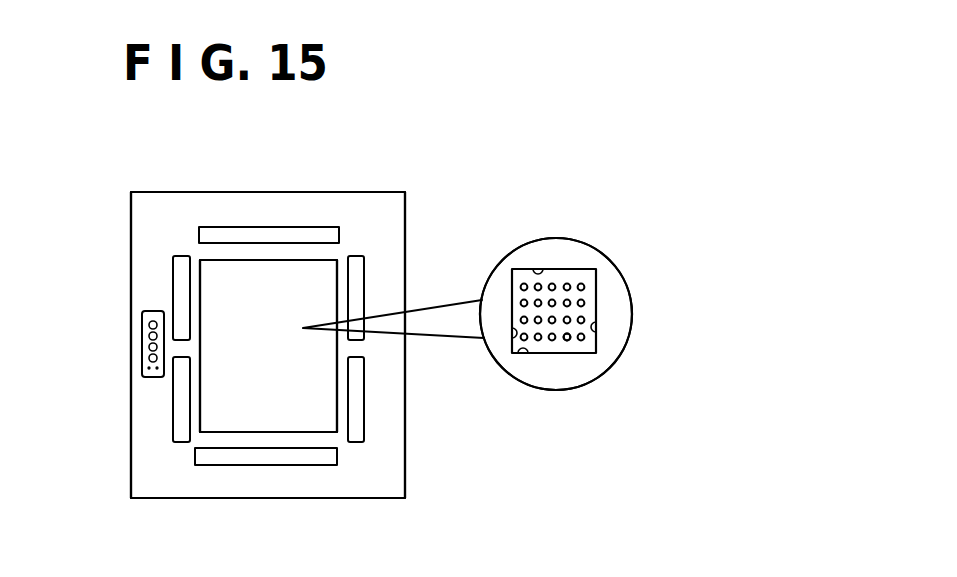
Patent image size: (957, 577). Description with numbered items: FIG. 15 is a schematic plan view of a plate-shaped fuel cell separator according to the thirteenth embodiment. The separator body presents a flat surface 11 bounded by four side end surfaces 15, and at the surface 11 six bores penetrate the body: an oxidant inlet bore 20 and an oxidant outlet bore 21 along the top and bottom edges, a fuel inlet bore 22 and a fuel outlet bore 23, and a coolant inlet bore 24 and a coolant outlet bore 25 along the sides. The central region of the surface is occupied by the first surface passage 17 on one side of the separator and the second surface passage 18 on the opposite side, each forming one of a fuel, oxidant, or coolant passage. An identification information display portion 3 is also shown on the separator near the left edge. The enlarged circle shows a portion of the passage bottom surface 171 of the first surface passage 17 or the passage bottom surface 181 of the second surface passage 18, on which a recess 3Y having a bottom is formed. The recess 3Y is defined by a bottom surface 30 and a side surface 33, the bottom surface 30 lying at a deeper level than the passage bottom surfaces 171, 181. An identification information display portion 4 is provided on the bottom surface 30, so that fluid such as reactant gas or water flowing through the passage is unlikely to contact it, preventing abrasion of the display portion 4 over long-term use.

The flat surface 11 is at (140, 415).
The side end surface 15 is at (287, 192).
The oxidant inlet bore 20 is at (230, 235).
The oxidant outlet bore 21 is at (287, 460).
The fuel inlet bore 22 is at (170, 425).
The fuel outlet bore 23 is at (357, 296).
The coolant inlet bore 24 is at (185, 272).
The coolant outlet bore 25 is at (355, 420).
The first surface passage 17 is at (313, 302).
The second surface passage 18 is at (268, 346).
The passage bottom surface 171 is at (303, 282).
The passage bottom surface 181 is at (556, 314).
The identification information display portion 3 is at (143, 367).
The identification information display portion 4 is at (142, 345).
The bottom surface 30 is at (556, 346).
The side surface 33 is at (541, 272).
The recess 3Y is at (574, 346).